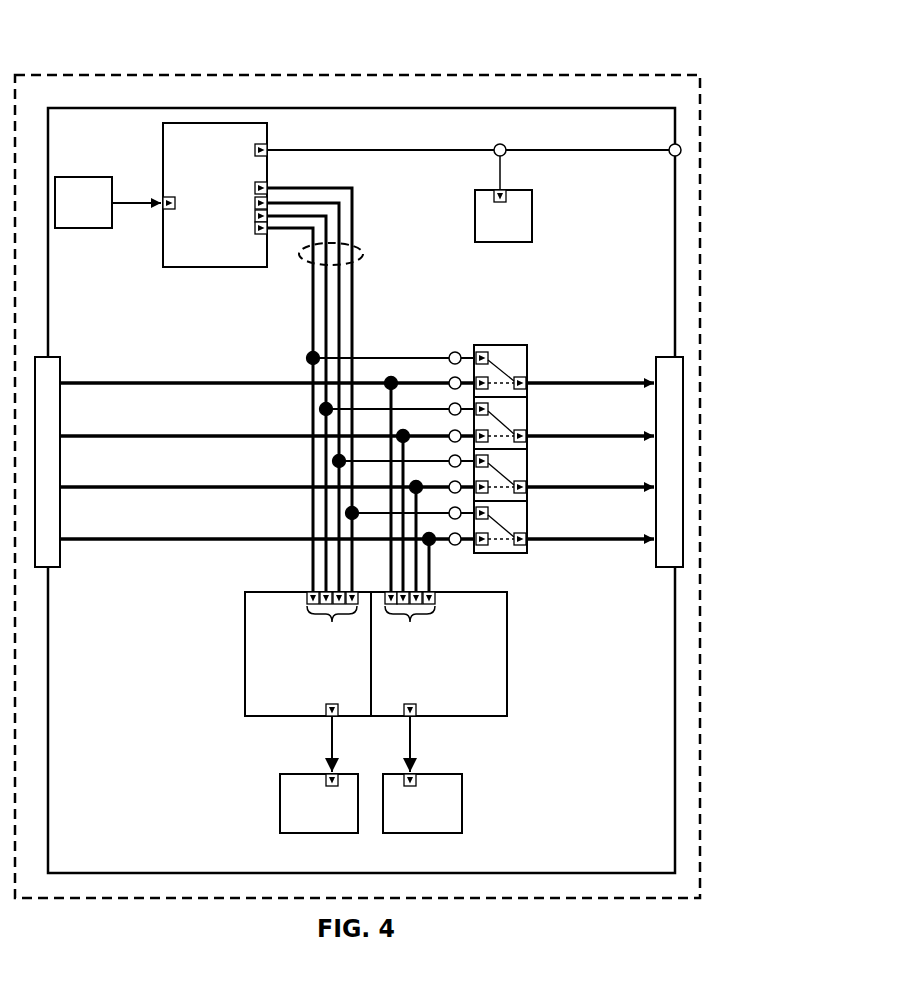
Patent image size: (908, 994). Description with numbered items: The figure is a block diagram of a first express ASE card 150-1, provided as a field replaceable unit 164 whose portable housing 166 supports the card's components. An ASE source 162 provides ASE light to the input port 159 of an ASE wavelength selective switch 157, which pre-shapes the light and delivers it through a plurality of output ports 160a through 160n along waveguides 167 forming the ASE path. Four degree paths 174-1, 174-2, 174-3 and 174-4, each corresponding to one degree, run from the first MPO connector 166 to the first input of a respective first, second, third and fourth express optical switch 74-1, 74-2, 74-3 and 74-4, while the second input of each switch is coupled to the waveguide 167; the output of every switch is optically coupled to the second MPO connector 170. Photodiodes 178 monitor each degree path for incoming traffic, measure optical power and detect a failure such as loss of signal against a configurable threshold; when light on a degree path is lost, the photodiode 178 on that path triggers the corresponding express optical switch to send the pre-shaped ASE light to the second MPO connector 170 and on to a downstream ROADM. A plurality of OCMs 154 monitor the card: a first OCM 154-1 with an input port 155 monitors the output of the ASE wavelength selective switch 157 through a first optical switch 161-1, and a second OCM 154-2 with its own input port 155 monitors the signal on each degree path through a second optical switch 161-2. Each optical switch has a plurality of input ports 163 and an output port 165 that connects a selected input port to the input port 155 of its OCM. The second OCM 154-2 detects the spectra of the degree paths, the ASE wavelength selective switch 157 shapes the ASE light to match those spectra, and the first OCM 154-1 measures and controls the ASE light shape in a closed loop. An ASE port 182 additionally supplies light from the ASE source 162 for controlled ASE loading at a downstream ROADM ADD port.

The first express ASE card 150-1 is at (782, 40).
The field replaceable unit 164 is at (712, 246).
The first MPO connector 166 is at (688, 212).
The ASE wavelength selective switch 157 is at (419, 195).
The ASE port 182 is at (668, 160).
The optical channel monitors 154 is at (503, 199).
The ASE source 162 is at (108, 202).
The input port 159 is at (163, 211).
The output port 160a is at (266, 188).
The output port 160n is at (263, 233).
The waveguide 167 is at (403, 244).
The first degree path 174-1 is at (175, 380).
The second degree path 174-2 is at (175, 432).
The third degree path 174-3 is at (175, 485).
The fourth degree path 174-4 is at (175, 537).
The photodiode 178 is at (452, 377).
The first express optical switch 74-1 is at (528, 374).
The second express optical switch 74-2 is at (528, 427).
The third express optical switch 74-3 is at (528, 479).
The fourth express optical switch 74-4 is at (528, 524).
The second MPO connector 170 is at (673, 357).
The first optical switch 161-1 is at (262, 592).
The second optical switch 161-2 is at (490, 592).
The input ports 163 is at (371, 629).
The output port 165 is at (326, 710).
The first OCM 154-1 is at (319, 803).
The second OCM 154-2 is at (422, 803).
The input port 155 is at (326, 780).